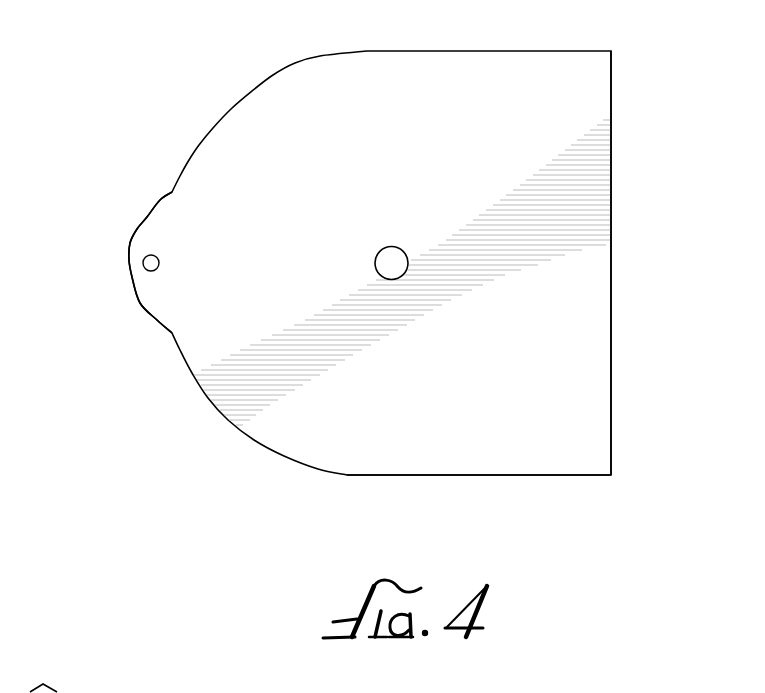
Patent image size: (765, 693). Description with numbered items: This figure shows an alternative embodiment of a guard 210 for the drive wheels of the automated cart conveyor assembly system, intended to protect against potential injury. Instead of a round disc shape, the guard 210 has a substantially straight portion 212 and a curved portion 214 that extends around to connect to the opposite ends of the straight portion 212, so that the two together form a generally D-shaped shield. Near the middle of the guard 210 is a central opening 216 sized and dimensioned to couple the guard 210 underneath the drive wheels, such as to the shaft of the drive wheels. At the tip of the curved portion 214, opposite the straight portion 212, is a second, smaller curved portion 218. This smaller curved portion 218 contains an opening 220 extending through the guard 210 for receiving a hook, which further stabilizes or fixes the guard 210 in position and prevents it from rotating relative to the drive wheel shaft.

The guard 210 is at (90, 108).
The straight portion 212 is at (611, 278).
The curved portion 214 is at (420, 476).
The central opening 216 is at (391, 246).
The second, smaller curved portion 218 is at (130, 251).
The opening 220 is at (159, 264).